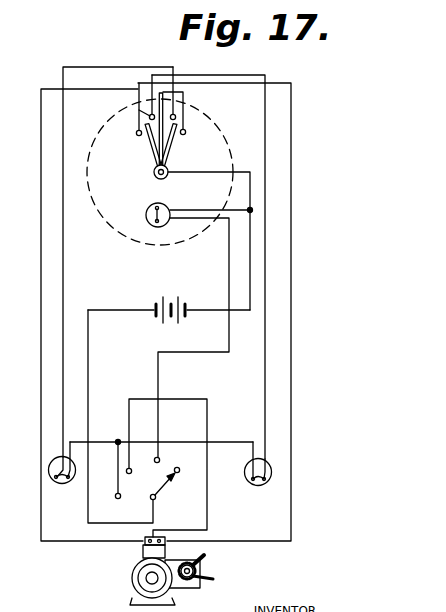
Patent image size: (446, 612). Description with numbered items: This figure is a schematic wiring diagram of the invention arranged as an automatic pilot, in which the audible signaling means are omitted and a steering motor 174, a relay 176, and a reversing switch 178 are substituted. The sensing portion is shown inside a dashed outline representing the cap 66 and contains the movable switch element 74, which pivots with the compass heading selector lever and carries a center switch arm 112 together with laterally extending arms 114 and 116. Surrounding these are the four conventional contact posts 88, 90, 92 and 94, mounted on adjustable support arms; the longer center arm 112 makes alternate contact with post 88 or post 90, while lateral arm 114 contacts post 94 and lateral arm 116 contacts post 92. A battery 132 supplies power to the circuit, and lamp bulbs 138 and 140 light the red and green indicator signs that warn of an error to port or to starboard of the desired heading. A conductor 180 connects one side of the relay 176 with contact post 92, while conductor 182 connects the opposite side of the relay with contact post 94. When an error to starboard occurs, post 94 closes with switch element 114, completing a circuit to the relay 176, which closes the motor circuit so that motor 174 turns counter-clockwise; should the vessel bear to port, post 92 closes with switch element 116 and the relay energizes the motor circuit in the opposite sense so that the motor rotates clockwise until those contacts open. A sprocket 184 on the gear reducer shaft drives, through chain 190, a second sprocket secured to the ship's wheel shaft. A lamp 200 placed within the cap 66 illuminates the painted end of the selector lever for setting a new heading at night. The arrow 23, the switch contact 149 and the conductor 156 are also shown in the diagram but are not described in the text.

The direction arrow 23 is at (222, 157).
The cap 66 is at (116, 237).
The switch element 74 is at (153, 152).
The contact post 88 is at (176, 113).
The contact post 90 is at (139, 110).
The contact post 92 is at (185, 104).
The contact post 94 is at (136, 133).
The center switch arm 112 is at (186, 134).
The lateral arm 114 is at (150, 140).
The lateral arm 116 is at (172, 140).
The battery 132 is at (170, 294).
The lamp bulb 138 is at (52, 481).
The lamp bulb 140 is at (254, 484).
The switch contact 149 is at (116, 498).
The conductor 156 is at (250, 263).
The steering motor 174 is at (133, 569).
The relay 176 is at (173, 530).
The reversing switch 178 is at (142, 551).
The conductor 180 is at (41, 278).
The conductor 182 is at (291, 381).
The sprocket 184 is at (206, 559).
The chain 190 is at (214, 577).
The lamp 200 is at (147, 210).